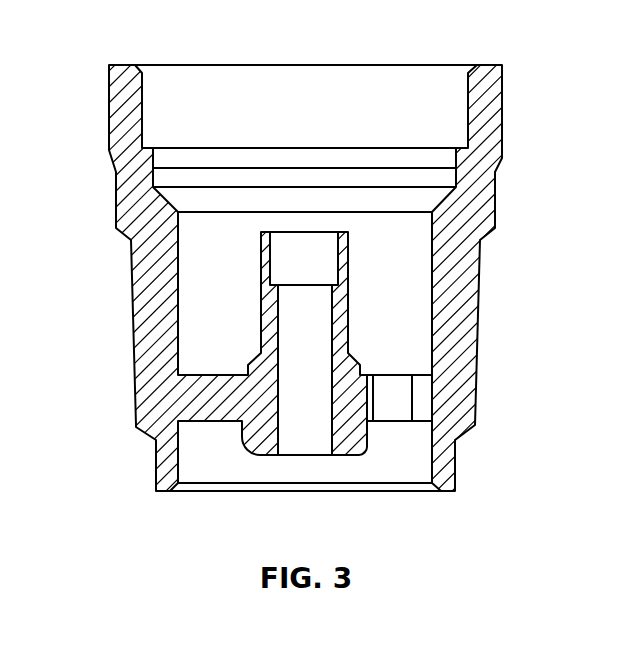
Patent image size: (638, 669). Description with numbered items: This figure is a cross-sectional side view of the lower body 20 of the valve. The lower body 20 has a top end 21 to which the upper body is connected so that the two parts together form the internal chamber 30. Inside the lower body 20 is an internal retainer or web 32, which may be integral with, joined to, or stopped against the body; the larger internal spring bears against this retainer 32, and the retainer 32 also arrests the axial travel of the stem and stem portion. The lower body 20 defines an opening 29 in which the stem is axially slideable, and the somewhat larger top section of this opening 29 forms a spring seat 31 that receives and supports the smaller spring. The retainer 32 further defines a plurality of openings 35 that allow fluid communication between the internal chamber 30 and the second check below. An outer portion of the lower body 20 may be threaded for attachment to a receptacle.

The lower body 20 is at (480, 313).
The top end 21 is at (482, 65).
The opening 29 is at (332, 413).
The internal chamber 30 is at (228, 303).
The spring seat 31 is at (337, 283).
The retainer or web 32 is at (188, 399).
The openings 35 is at (386, 387).